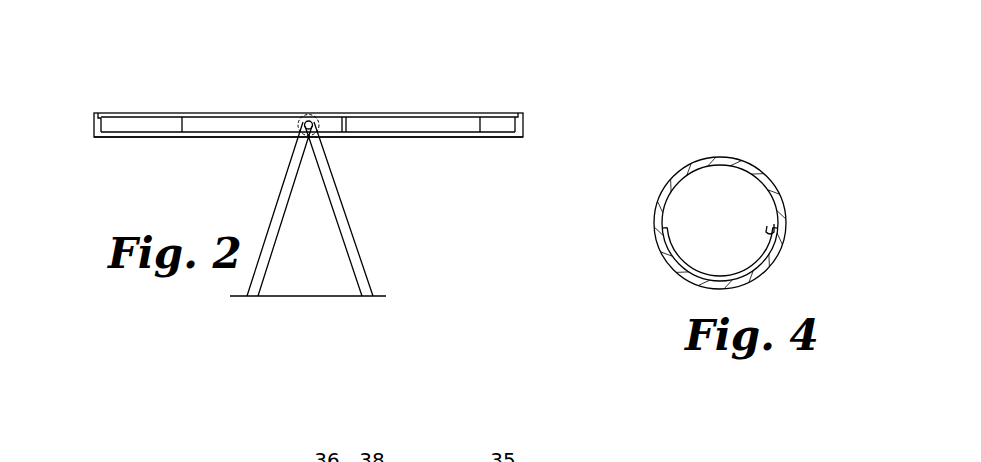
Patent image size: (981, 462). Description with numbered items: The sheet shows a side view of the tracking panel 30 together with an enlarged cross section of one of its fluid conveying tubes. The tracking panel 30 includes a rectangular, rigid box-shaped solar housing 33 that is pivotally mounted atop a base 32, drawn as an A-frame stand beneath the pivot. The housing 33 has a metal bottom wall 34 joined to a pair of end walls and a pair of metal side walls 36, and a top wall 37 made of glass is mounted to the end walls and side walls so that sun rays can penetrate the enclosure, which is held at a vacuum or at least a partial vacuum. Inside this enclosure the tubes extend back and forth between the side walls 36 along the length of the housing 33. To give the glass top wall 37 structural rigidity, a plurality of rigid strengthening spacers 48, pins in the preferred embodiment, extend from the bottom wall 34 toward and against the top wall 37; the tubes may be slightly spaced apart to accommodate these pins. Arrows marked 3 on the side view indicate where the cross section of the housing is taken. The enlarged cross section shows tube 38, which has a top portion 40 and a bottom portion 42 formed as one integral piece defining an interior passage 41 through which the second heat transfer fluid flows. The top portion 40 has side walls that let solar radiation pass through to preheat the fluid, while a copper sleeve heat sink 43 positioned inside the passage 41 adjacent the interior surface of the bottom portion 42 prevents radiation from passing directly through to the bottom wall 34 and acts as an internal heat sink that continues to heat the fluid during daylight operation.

In FIG. 2, the section line 3- 3 is at (157, 112).
In FIG. 2, the tracking panel 30 is at (498, 96).
In FIG. 2, the base 32 is at (360, 256).
In FIG. 2, the solar housing 33 is at (117, 137).
In FIG. 2, the bottom wall 34 is at (172, 137).
In FIG. 2, the side walls 36 is at (94, 124).
In FIG. 2, the top wall 37 is at (370, 113).
In FIG. 2, the strengthening spacers 48 is at (178, 123).
In FIG. 4, the tube 38 is at (732, 158).
In FIG. 4, the top portion 40 is at (770, 178).
In FIG. 4, the interior passage 41 is at (708, 217).
In FIG. 4, the bottom portion 42 is at (668, 258).
In FIG. 4, the copper sleeve heat sink 43 is at (767, 230).